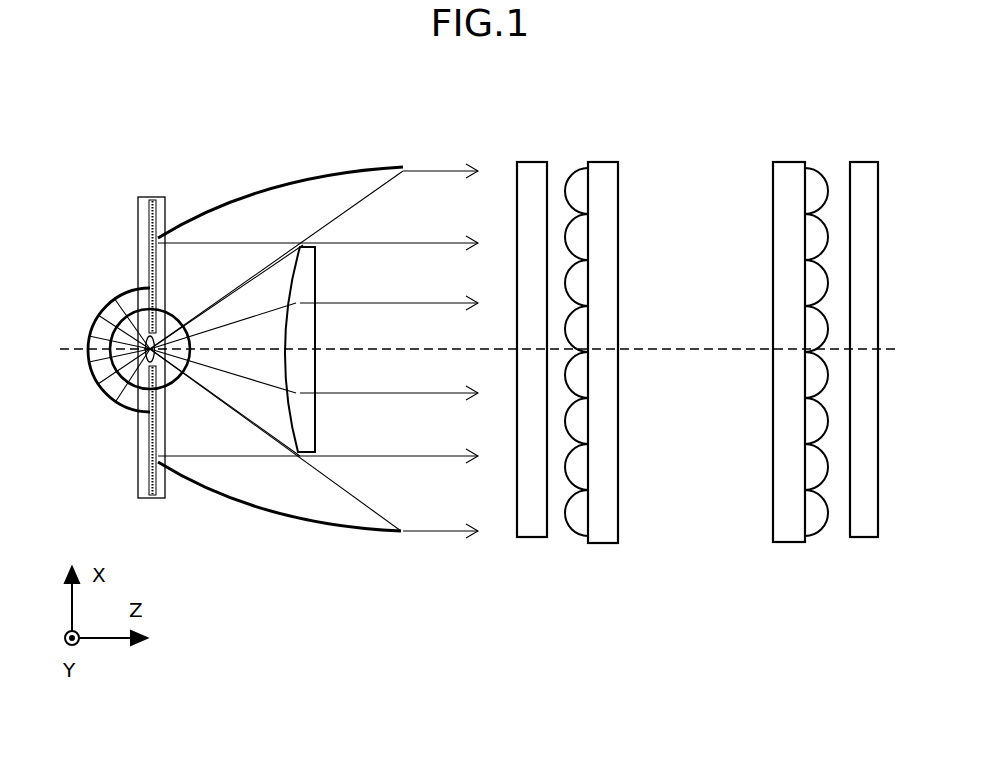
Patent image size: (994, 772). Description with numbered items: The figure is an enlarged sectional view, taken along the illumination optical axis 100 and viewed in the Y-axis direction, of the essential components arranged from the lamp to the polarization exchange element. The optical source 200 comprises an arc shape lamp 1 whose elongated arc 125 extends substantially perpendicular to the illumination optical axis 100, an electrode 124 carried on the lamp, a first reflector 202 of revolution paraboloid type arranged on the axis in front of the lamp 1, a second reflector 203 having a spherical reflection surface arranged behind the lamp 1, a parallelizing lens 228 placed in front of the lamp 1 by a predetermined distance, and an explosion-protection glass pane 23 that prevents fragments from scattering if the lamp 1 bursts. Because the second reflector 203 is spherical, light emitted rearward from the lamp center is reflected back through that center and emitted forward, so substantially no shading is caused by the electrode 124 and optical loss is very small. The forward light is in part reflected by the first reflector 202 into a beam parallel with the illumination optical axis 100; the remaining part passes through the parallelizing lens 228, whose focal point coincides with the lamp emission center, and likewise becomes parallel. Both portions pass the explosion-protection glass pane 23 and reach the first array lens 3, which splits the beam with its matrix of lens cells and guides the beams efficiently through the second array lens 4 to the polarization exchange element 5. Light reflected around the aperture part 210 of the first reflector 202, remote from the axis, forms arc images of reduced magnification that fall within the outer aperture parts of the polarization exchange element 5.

The arc shape lamp 1 is at (177, 375).
The first array lens 3 is at (602, 541).
The second array lens 4 is at (788, 530).
The polarization exchange element 5 is at (868, 530).
The explosion-protection glass pane 23 is at (535, 527).
The illumination optical axis 100 is at (705, 352).
The electrode 124 is at (147, 215).
The arc 125 is at (123, 310).
The optical source 200 is at (548, 120).
The first reflector 202 is at (260, 513).
The second reflector 203 is at (128, 410).
The aperture part of the first reflector 210 is at (395, 505).
The parallelizing lens 228 is at (300, 247).